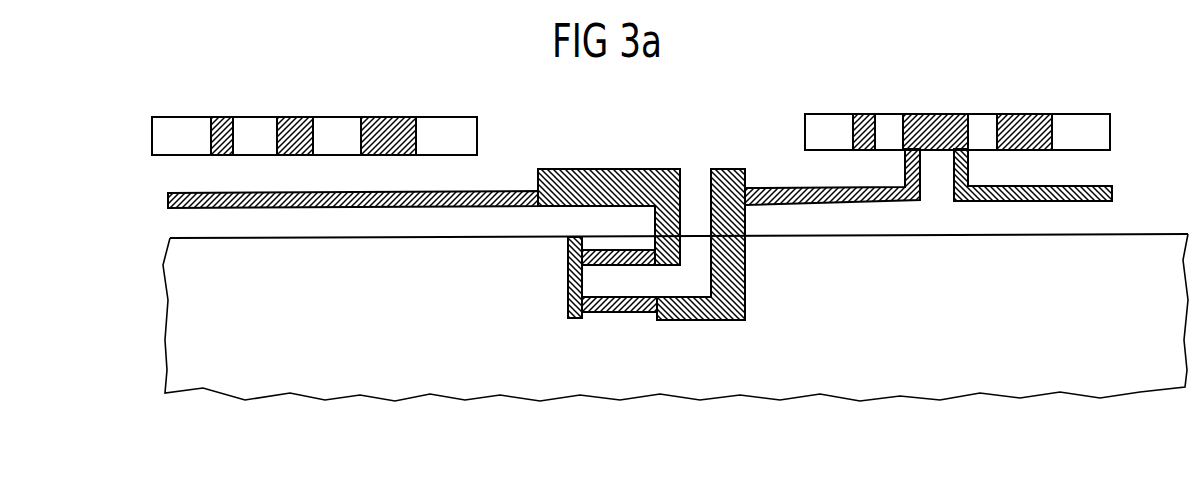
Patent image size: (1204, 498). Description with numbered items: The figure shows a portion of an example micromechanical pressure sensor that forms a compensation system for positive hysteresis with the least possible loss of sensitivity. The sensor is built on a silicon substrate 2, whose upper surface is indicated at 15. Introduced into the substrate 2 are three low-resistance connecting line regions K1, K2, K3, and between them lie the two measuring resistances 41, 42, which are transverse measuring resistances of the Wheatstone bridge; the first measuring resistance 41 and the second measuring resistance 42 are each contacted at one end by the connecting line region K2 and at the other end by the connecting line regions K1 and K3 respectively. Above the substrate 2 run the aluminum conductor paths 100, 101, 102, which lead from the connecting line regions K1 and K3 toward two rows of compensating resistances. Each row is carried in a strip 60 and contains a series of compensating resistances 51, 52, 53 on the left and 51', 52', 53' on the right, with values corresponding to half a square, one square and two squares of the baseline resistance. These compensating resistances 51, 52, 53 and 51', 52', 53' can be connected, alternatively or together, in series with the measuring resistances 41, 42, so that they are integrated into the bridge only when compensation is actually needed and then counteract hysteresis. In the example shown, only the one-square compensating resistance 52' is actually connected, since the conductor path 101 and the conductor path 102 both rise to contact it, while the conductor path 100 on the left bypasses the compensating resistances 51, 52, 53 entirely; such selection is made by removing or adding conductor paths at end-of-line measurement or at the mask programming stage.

The substrate 2 is at (1004, 347).
The substrate surface 15 is at (1137, 237).
The measuring resistance 41 is at (567, 263).
The measuring resistance 42 is at (618, 313).
The compensating resistance 51 is at (224, 102).
The compensating resistance 52 is at (297, 102).
The compensating resistance 53 is at (388, 102).
The compensating resistance 51' is at (866, 97).
The compensating resistance 52' is at (935, 97).
The compensating resistance 53' is at (1024, 97).
The electrode carrier layer 60 is at (170, 118).
The conductor path 100 is at (512, 190).
The conductor path 101 is at (770, 187).
The conductor path 102 is at (1112, 194).
The low-resistance connecting line region K1 is at (652, 169).
The low-resistance connecting line region K2 is at (566, 298).
The low-resistance connecting line region K3 is at (748, 292).